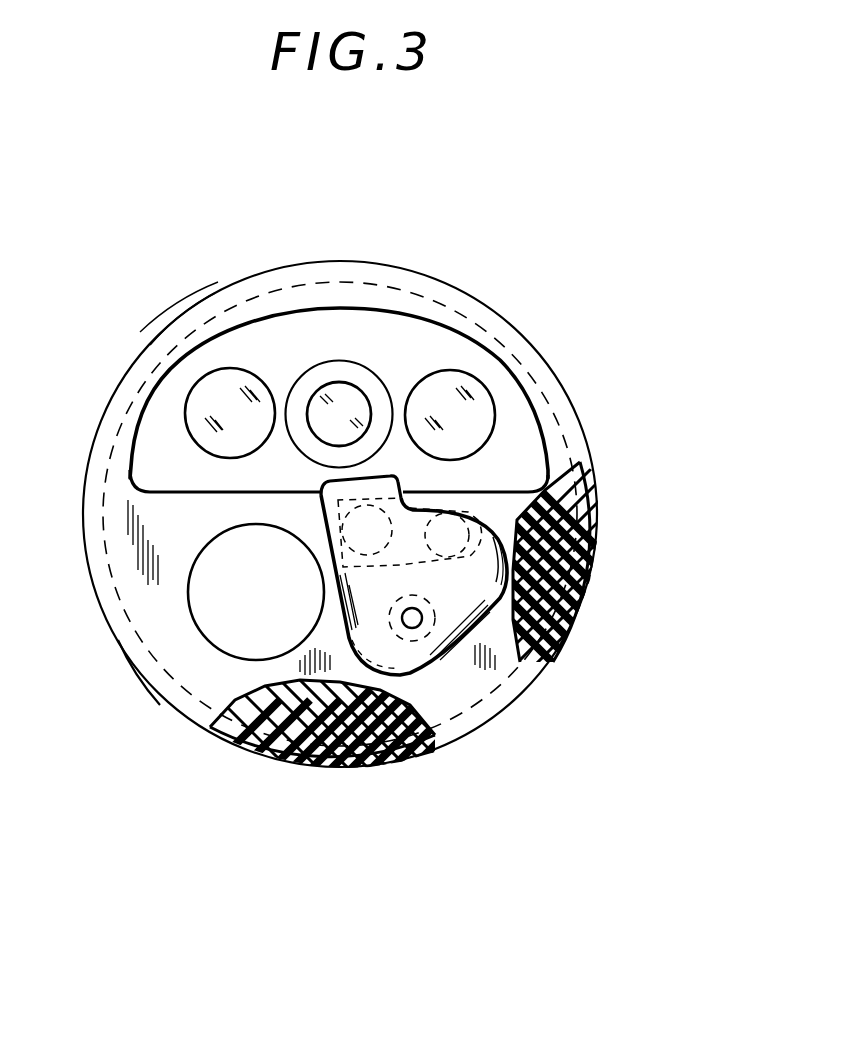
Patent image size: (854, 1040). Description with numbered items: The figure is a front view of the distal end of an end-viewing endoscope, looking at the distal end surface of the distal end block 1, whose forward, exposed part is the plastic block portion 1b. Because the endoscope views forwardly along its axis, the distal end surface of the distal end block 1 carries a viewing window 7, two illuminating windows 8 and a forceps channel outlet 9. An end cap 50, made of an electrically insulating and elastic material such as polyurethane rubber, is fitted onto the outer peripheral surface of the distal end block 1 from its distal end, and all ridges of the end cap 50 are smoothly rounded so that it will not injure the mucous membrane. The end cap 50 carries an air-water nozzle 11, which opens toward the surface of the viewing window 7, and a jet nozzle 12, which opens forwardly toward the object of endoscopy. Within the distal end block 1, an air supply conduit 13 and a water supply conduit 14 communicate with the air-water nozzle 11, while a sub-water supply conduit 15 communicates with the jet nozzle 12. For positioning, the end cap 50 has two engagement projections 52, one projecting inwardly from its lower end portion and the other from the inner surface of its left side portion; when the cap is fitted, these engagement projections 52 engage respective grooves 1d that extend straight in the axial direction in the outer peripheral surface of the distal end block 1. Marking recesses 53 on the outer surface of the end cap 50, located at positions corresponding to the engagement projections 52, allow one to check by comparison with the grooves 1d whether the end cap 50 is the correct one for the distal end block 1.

The distal end block 1 is at (532, 344).
The plastic block portion 1b is at (393, 325).
The grooves 1d is at (350, 743).
The viewing window 7 is at (345, 396).
The illuminating windows 8 is at (207, 390).
The forceps channel outlet 9 is at (213, 647).
The air-water nozzle 11 is at (355, 490).
The jet nozzle 12 is at (413, 630).
The air supply conduit 13 is at (385, 518).
The water supply conduit 14 is at (467, 533).
The sub-water supply conduit 15 is at (427, 636).
The end cap 50 is at (127, 654).
The engagement projections 52 is at (328, 740).
The marking recesses 53 is at (317, 757).